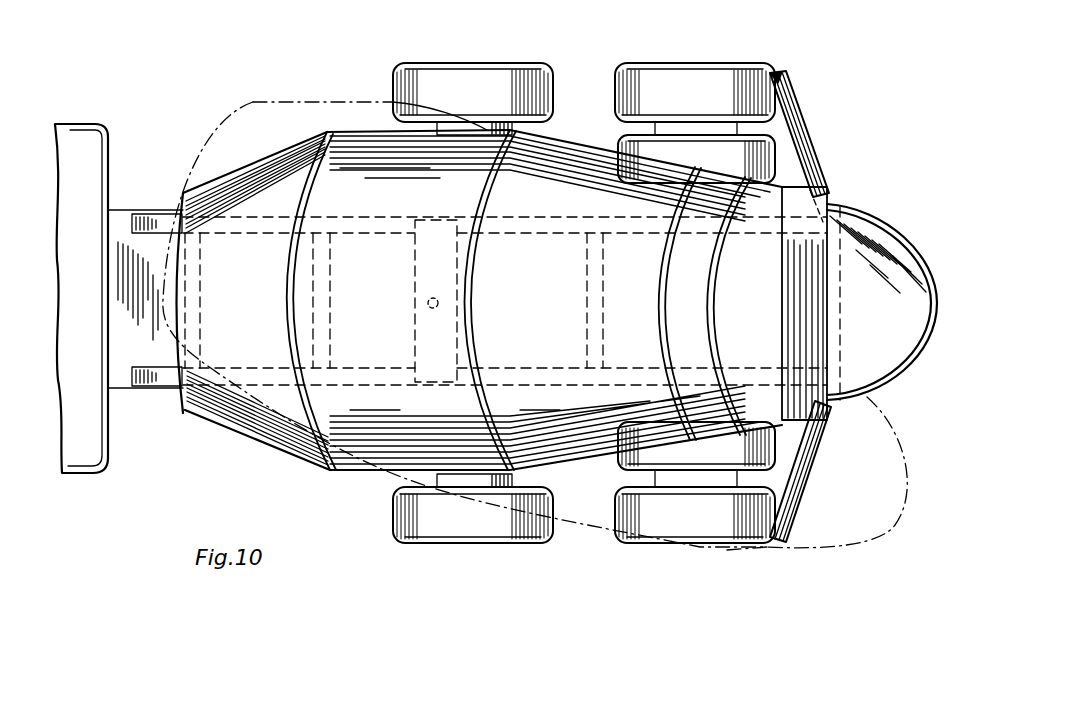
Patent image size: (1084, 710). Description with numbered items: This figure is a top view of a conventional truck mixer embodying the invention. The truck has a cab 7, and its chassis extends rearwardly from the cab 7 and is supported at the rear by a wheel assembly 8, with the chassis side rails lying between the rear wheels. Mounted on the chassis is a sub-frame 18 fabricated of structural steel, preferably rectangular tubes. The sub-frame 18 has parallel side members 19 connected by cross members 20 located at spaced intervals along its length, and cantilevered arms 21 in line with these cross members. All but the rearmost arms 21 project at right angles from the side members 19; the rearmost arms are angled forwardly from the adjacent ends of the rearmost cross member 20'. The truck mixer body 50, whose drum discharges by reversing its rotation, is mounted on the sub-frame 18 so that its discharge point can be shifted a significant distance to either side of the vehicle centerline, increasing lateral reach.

The cab 7 is at (87, 140).
The wheel assembly 8 is at (601, 42).
The sub-frame 18 is at (535, 345).
The side members 19 is at (196, 412).
The cross members 20 is at (534, 300).
The rearmost cross member 20' is at (859, 303).
The cantilevered arms 21 is at (298, 178).
The truck mixer body 50 is at (360, 152).